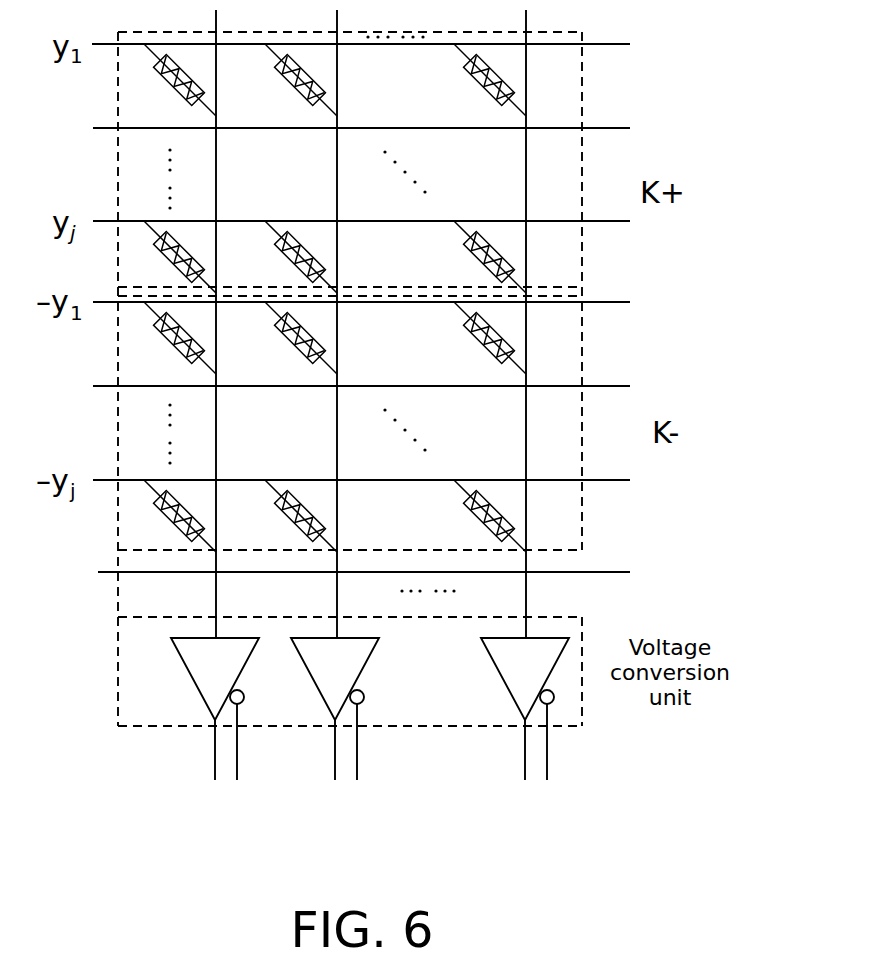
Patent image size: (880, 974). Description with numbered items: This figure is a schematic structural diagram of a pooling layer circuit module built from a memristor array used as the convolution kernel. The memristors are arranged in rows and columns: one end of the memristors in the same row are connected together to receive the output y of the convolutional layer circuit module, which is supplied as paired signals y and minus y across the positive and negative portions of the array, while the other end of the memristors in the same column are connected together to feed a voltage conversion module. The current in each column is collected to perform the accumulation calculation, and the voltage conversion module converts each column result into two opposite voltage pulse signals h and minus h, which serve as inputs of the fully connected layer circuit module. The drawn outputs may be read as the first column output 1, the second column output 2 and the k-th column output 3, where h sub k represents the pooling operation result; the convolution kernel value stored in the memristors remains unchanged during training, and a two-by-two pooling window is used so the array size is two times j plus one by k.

The first voltage conversion buffer with outputs h1 and -h1 1 is at (222, 731).
The second voltage conversion buffer with outputs h2 and -h2 2 is at (342, 731).
The k-th voltage conversion buffer with outputs hk and -hk 3 is at (532, 731).